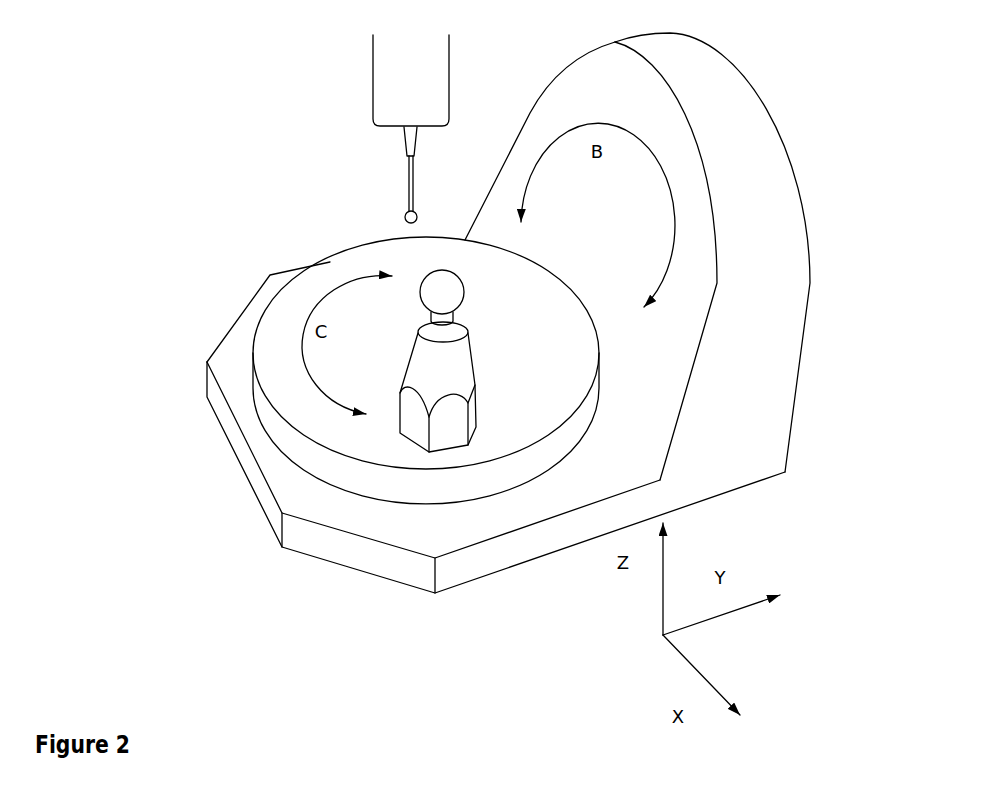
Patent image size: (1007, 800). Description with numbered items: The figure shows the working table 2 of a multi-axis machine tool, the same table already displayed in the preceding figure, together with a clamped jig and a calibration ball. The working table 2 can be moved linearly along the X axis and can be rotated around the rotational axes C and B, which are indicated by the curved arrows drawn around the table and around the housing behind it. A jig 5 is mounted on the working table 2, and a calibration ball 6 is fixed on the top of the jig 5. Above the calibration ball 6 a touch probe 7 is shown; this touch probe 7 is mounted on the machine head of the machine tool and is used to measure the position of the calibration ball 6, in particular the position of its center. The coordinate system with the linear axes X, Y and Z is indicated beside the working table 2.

The working table 2 is at (470, 477).
The jig 5 is at (412, 375).
The calibration ball 6 is at (430, 297).
The touch probe 7 is at (378, 183).